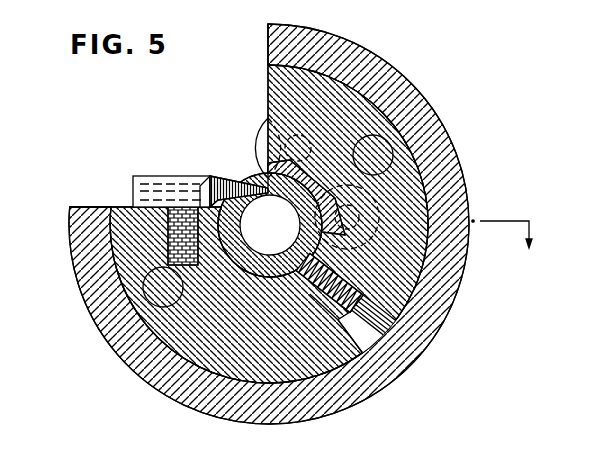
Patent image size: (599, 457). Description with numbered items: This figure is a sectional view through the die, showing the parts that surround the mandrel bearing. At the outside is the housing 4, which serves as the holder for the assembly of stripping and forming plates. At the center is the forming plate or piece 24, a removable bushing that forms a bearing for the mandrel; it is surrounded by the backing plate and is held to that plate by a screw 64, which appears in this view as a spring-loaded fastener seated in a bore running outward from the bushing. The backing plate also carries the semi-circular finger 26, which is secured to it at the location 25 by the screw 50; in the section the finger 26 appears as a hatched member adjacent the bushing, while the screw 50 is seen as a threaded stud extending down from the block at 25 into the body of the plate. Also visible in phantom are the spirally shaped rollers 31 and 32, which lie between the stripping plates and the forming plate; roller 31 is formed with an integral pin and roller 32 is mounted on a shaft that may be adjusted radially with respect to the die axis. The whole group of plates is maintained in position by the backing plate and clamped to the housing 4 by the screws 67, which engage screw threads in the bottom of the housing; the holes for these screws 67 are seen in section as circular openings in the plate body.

The housing 4 is at (92, 313).
The forming plate 24 is at (268, 277).
The securing point of finger 25 is at (133, 193).
The semi-circular finger 26 is at (268, 186).
The spirally shaped roller 31 is at (261, 130).
The spirally shaped roller 32 is at (385, 212).
The screw 50 is at (168, 238).
The screw 64 is at (395, 340).
The screws 67 is at (393, 157).